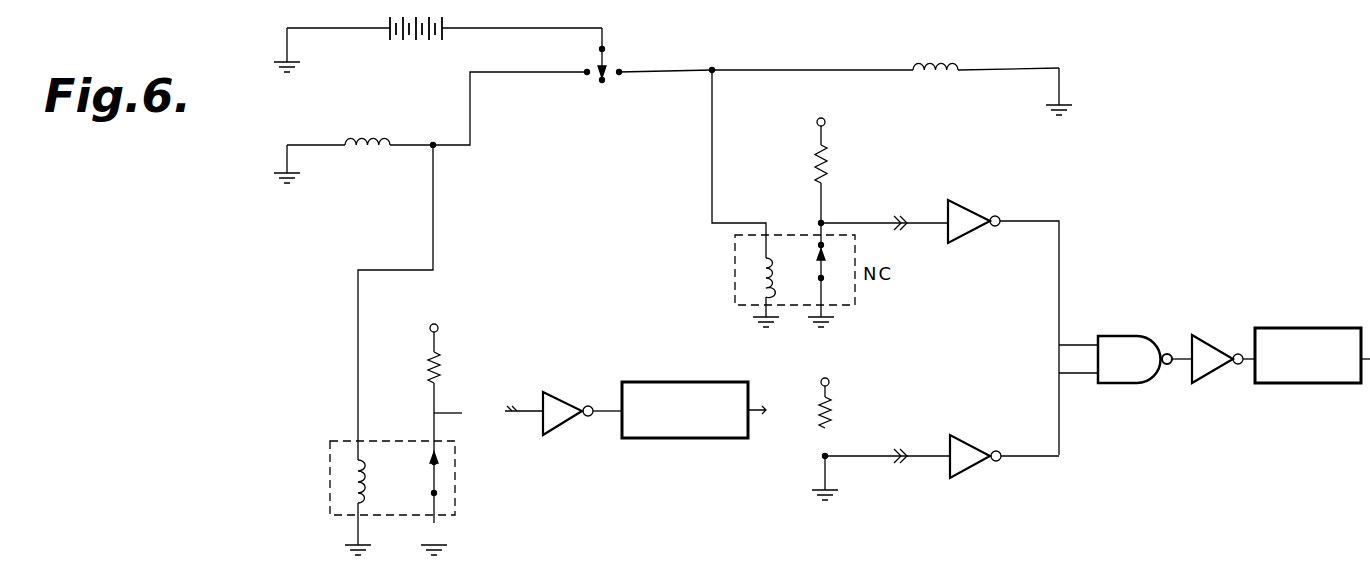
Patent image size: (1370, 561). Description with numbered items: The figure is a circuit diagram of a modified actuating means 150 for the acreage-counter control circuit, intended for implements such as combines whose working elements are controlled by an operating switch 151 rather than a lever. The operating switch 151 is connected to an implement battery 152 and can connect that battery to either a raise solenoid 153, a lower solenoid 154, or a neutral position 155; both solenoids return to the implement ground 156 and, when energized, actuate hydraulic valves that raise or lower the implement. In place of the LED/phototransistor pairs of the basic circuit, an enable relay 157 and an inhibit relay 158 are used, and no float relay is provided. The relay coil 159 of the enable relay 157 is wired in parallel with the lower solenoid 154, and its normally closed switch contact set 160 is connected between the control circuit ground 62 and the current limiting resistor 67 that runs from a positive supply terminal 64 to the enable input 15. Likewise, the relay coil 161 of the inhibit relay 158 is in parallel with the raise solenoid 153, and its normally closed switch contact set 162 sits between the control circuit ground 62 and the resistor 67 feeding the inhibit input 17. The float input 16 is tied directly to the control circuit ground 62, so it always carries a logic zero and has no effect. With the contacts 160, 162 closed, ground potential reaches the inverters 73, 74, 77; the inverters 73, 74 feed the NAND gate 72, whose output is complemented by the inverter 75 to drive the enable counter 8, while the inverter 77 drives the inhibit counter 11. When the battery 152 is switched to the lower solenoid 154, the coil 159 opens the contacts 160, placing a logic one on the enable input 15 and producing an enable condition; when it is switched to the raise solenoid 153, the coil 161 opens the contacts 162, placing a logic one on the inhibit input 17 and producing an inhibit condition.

The enable counter 8 is at (1328, 328).
The inhibit counter 11 is at (622, 382).
The enable input 15 is at (931, 222).
The float input 16 is at (939, 456).
The inhibit input 17 is at (527, 410).
The control circuit ground 62 is at (836, 318).
The circuit terminals 64 is at (812, 125).
The current limiting resistor 67 is at (829, 171).
The NAND gate 72 is at (1128, 384).
The inverter 73 is at (975, 212).
The inverter 74 is at (973, 477).
The inverter 75 is at (1204, 343).
The inverter 77 is at (558, 432).
The modified actuating means 150 is at (718, 243).
The operating switch 151 is at (605, 60).
The implement battery 152 is at (442, 17).
The raise solenoid 153 is at (364, 150).
The lower solenoid 154 is at (953, 74).
The neutral position 155 is at (603, 82).
The implement ground 156 is at (278, 58).
The enable relay 157 is at (856, 247).
The inhibit relay 158 is at (330, 441).
The relay coil 159 is at (760, 278).
The normally closed switch contact set 160 is at (820, 268).
The relay coil 161 is at (358, 501).
The normally closed switch contact set 162 is at (434, 488).